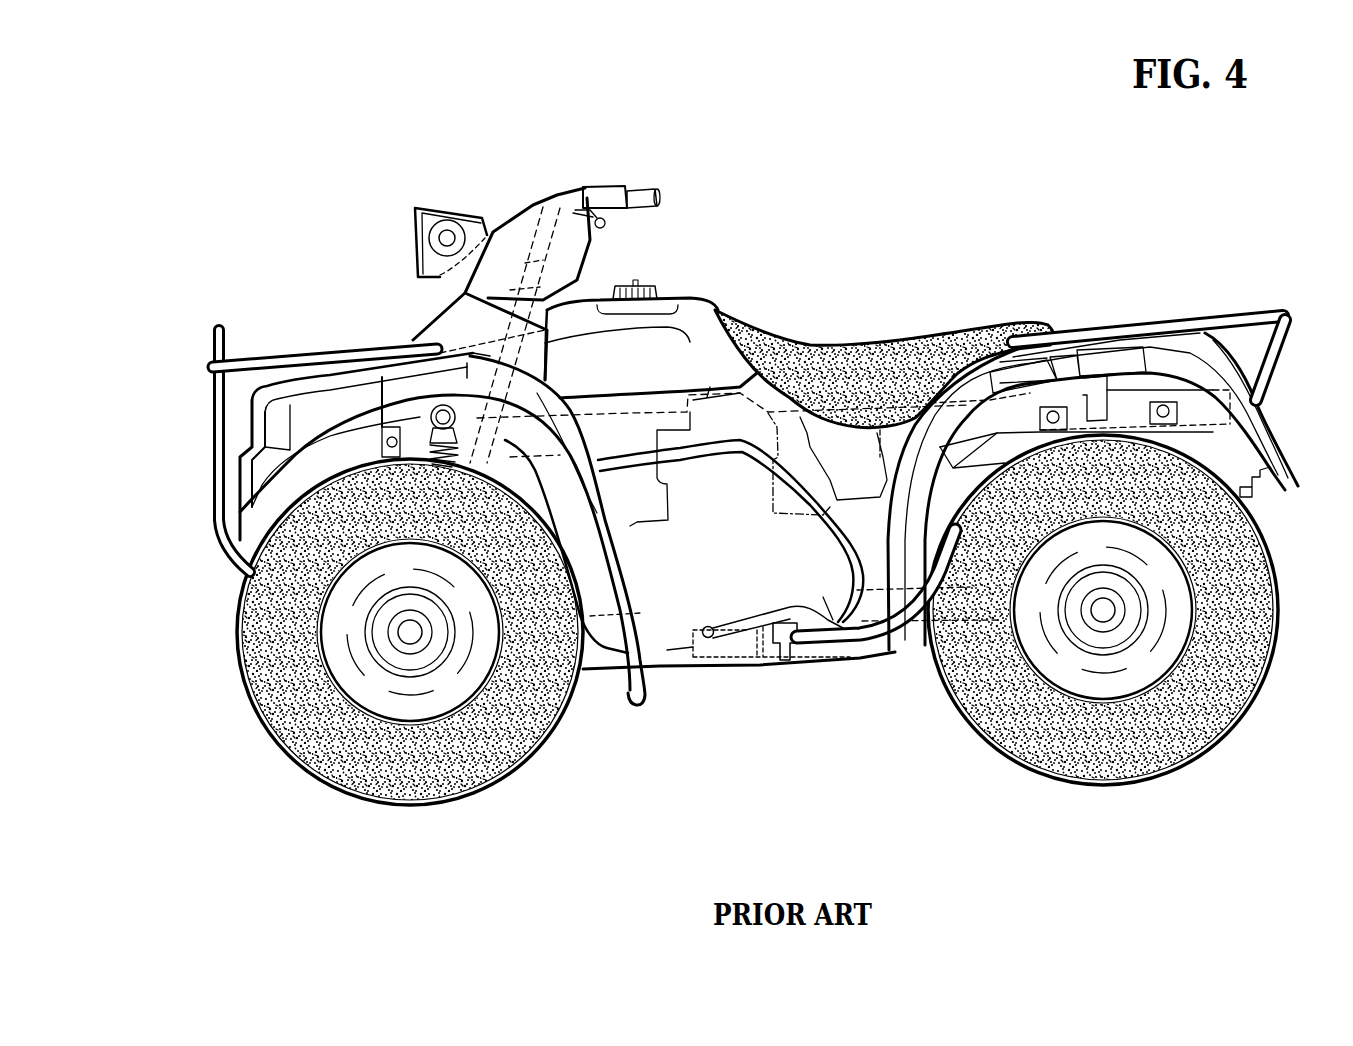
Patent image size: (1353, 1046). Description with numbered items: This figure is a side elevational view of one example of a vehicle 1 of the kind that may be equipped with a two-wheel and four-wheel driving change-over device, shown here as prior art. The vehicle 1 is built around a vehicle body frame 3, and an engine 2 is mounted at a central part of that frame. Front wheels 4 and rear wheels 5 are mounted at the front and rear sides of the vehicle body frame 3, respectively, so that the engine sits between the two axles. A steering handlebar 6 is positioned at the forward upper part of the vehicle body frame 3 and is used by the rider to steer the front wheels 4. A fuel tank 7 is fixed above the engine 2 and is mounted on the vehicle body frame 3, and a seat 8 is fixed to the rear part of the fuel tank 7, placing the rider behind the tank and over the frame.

The vehicle 1 is at (700, 288).
The engine 2 is at (840, 660).
The vehicle body frame 3 is at (722, 672).
The front wheels 4 is at (257, 708).
The rear wheels 5 is at (980, 732).
The steering handlebar 6 is at (600, 186).
The fuel tank 7 is at (672, 292).
The seat 8 is at (887, 345).